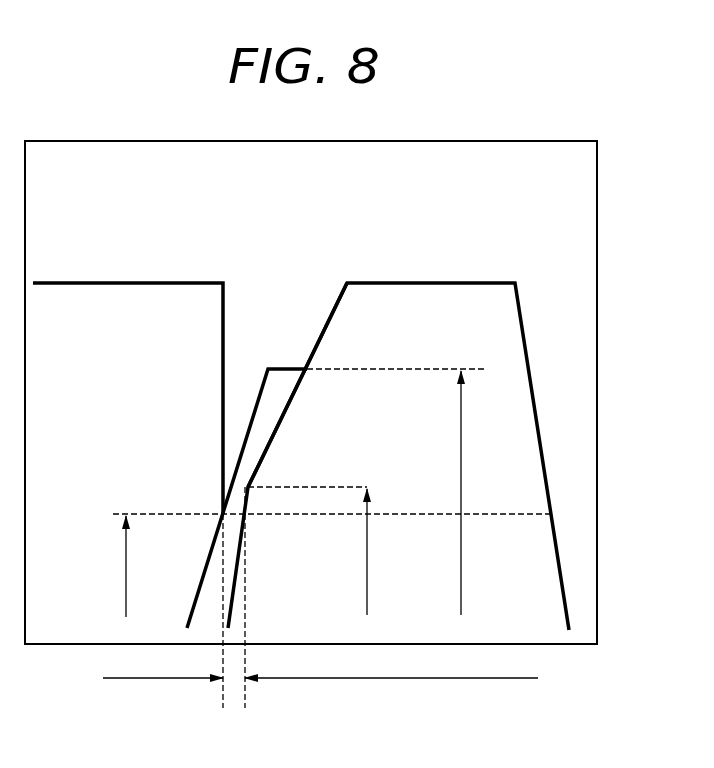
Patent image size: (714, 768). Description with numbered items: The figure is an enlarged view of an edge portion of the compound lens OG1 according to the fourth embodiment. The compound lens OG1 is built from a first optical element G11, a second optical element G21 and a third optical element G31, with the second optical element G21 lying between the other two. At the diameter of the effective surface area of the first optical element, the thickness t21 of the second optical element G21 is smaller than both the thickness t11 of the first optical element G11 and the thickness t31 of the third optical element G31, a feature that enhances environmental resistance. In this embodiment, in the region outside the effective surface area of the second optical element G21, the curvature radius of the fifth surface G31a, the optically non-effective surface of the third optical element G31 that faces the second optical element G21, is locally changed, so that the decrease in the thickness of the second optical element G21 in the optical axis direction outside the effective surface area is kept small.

The compound lens OG1 is at (561, 131).
The first optical element G11 is at (122, 300).
The second optical element G21 is at (283, 382).
The third optical element G31 is at (422, 300).
The fifth surface G31a is at (322, 315).
The thickness of the first optical element t11 is at (163, 611).
The thickness of the second optical element t21 is at (235, 682).
The thickness of the third optical element t31 is at (391, 694).